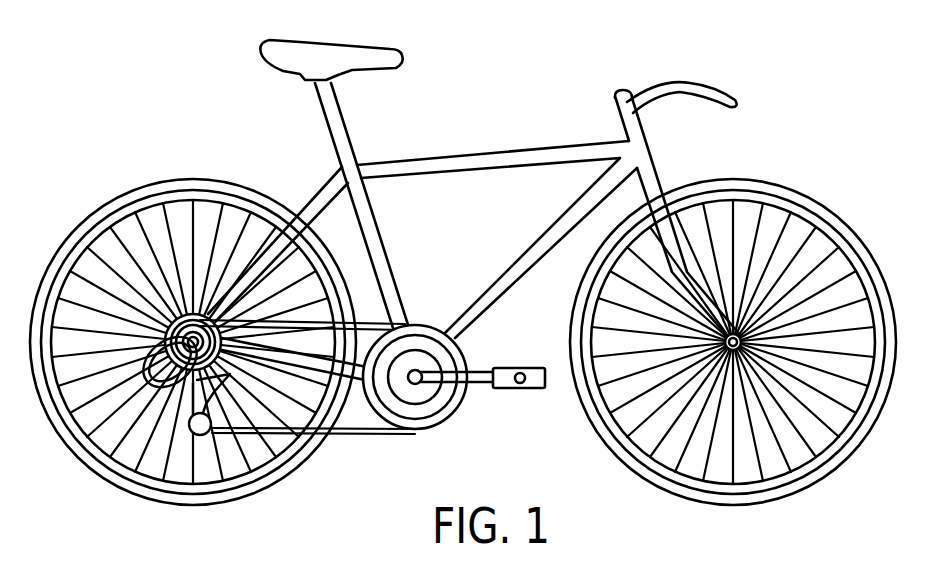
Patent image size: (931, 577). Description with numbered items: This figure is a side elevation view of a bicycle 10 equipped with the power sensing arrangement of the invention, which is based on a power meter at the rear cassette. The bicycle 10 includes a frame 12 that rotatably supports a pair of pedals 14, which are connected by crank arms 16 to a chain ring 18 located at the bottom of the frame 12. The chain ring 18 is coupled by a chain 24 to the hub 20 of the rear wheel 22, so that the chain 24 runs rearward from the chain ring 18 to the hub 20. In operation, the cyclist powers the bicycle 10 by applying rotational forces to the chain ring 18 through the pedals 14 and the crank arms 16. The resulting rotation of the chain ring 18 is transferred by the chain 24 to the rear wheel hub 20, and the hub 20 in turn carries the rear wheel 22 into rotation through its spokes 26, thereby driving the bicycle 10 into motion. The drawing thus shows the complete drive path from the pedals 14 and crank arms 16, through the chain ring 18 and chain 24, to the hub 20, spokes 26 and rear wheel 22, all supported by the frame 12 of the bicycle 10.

The bicycle 10 is at (552, 258).
The frame 12 is at (481, 160).
The pedals 14 is at (533, 389).
The crank arms 16 is at (478, 383).
The chain ring 18 is at (422, 413).
The hub 20 is at (125, 381).
The rear wheel 22 is at (190, 498).
The chain 24 is at (354, 425).
The spokes 26 is at (202, 197).